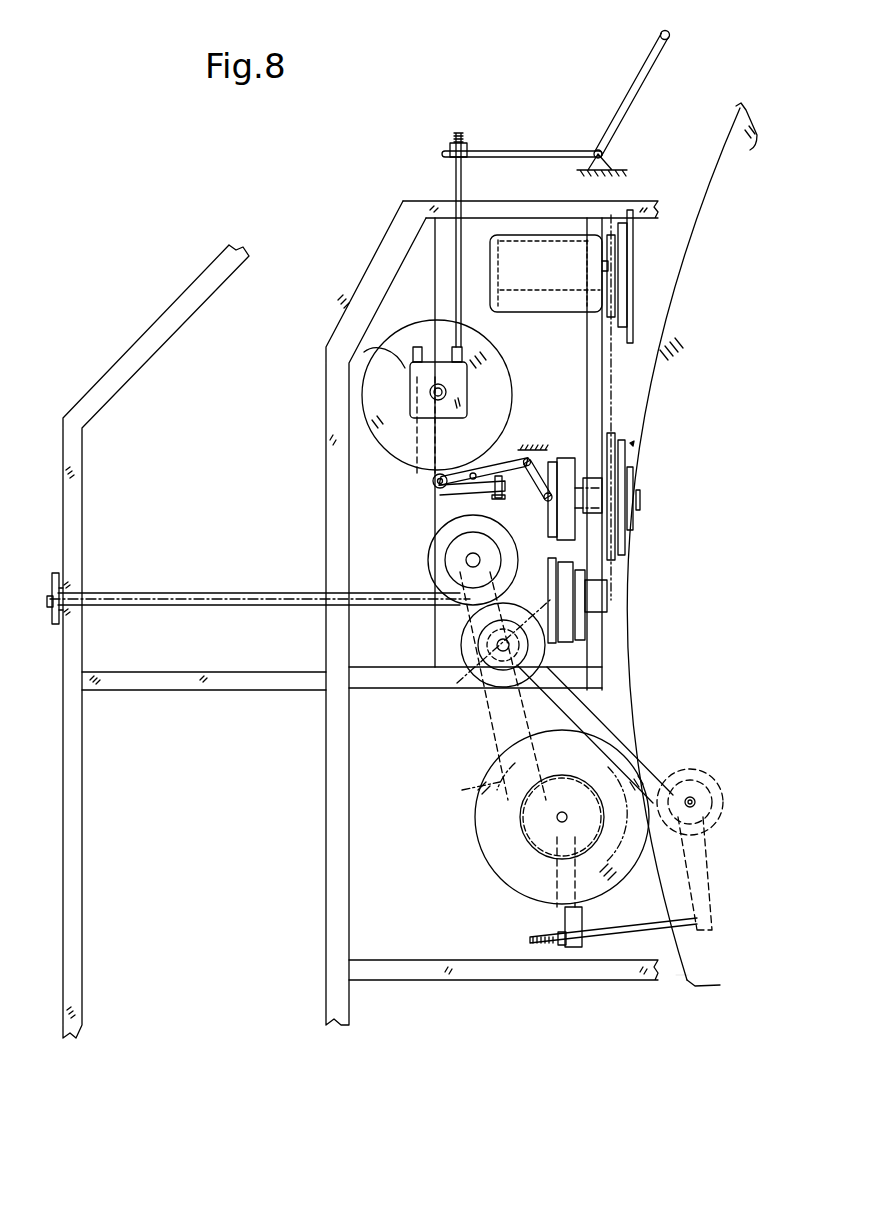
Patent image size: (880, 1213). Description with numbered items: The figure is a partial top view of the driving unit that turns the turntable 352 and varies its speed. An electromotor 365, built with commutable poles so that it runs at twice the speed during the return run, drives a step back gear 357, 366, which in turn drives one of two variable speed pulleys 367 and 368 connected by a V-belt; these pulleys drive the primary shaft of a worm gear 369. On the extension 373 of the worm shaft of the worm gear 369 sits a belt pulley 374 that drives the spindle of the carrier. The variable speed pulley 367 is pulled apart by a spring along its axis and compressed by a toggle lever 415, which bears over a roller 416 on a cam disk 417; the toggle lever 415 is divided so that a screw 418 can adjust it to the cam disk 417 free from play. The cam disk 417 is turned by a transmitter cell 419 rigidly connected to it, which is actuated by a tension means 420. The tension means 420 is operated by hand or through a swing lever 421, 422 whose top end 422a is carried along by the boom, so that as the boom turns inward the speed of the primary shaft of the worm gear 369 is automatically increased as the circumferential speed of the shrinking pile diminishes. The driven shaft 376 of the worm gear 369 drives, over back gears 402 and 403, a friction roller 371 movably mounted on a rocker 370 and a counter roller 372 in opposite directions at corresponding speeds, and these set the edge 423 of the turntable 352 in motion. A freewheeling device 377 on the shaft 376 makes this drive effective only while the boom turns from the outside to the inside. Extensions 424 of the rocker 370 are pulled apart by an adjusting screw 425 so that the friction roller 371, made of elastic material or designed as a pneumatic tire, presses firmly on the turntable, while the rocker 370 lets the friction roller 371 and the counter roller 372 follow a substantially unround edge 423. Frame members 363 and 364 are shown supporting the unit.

The turntable 352 is at (708, 176).
The step back gear 357 is at (632, 443).
The frame 363 is at (420, 206).
The frame portion 364 is at (228, 437).
The electromotor 365 is at (557, 276).
The step back gear 366 is at (632, 252).
The variable speed pulley 367 is at (555, 445).
The variable speed pulley 368 is at (583, 637).
The worm gear 369 is at (535, 580).
The rocker 370 is at (518, 722).
The friction roller 371 is at (480, 850).
The counter roller 372 is at (703, 765).
The extension of the worm shaft 373 is at (200, 600).
The belt pulley 374 is at (68, 572).
The driven shaft 376 is at (480, 680).
The freewheeling device 377 is at (473, 645).
The back gear 402 is at (610, 693).
The back gear 403 is at (470, 790).
The toggle lever 415 is at (487, 456).
The roller 416 is at (430, 489).
The cam disk 417 is at (488, 357).
The screw 418 is at (507, 500).
The transmitter cell 419 is at (405, 368).
The tension means 420 is at (462, 185).
The swing lever 421 is at (527, 150).
The swing lever 422 is at (627, 92).
The top end of the swing lever 422a is at (657, 37).
The edge of the turntable 423 is at (682, 984).
The extensions of the rocker 424 is at (563, 917).
The adjusting screw 425 is at (636, 908).